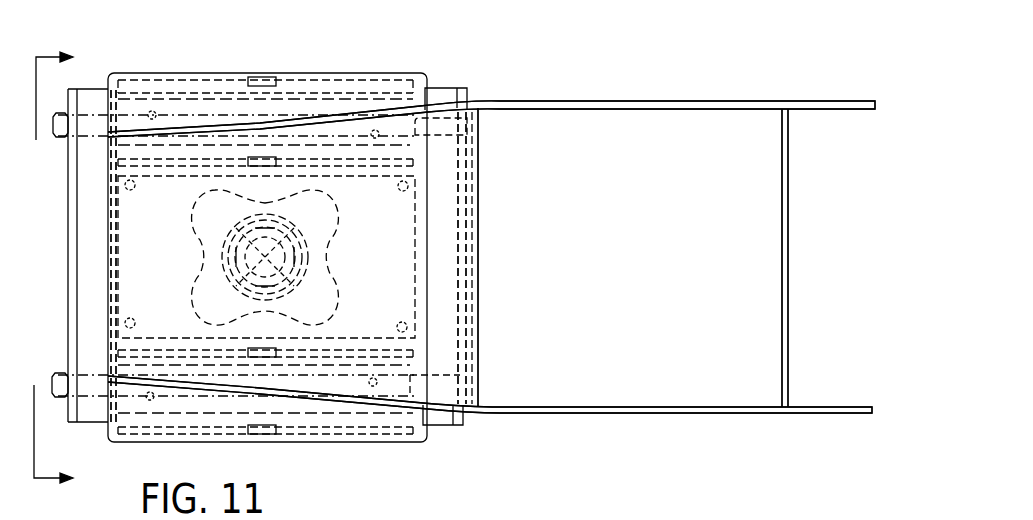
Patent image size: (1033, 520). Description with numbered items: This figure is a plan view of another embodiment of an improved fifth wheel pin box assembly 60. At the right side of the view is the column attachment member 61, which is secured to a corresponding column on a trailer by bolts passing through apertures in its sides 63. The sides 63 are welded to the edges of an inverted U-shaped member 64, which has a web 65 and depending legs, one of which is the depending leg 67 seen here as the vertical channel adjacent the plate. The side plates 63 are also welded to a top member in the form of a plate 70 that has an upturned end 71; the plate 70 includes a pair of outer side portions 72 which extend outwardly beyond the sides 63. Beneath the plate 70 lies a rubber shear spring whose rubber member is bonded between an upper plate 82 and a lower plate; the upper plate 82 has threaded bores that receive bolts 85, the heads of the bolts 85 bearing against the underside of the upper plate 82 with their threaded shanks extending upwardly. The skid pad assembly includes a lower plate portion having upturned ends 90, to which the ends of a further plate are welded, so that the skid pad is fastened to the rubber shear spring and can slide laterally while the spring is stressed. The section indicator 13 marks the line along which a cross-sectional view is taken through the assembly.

The section line 13- 13 is at (64, 267).
The fifth wheel pin box assembly 60 is at (723, 433).
The column attachment member 61 is at (680, 100).
The sides 63 is at (733, 100).
The inverted U-shaped member 64 is at (478, 200).
The web 65 is at (467, 163).
The depending leg 67 is at (478, 253).
The plate 70 is at (743, 288).
The upturned end 71 is at (788, 197).
The outer side portions 72 is at (312, 73).
The upper plate 82 is at (105, 272).
The bolts 85 is at (131, 318).
The upturned ends 90 is at (68, 220).